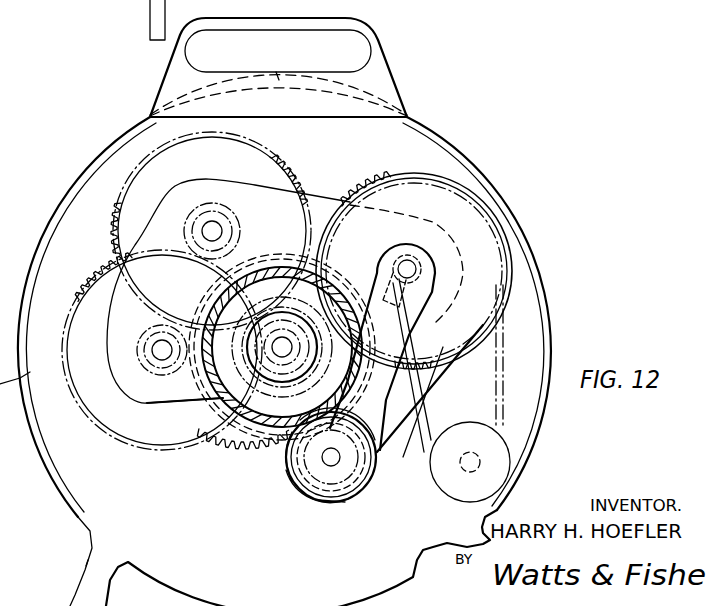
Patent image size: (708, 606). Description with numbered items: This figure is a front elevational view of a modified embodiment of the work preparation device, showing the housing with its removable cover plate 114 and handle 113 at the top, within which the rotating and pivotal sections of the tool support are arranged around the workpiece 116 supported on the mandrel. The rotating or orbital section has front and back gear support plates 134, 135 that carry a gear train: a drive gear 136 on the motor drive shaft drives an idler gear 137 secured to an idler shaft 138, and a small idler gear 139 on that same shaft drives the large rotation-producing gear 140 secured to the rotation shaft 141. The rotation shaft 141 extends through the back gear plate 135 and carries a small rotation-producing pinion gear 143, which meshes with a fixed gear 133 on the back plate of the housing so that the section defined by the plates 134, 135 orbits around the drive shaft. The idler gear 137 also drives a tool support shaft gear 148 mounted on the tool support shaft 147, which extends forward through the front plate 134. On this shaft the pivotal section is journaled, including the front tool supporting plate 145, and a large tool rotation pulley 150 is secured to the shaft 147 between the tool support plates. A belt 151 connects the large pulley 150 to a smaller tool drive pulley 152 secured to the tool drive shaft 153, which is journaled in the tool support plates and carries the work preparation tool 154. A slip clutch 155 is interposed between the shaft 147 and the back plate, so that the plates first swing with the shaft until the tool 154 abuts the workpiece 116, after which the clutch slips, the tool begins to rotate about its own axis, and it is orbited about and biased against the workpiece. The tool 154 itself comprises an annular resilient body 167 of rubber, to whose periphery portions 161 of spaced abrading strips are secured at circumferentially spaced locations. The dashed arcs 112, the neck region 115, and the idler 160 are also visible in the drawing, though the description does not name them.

The dashed arcs / cover plate 112 is at (258, 90).
The handle 113 is at (378, 57).
The removable cover plate 114 is at (520, 214).
The housing neck 115 is at (85, 566).
The workpiece 116 is at (208, 372).
The fixed gear 133 is at (217, 440).
The front gear support plate 134 is at (230, 186).
The back gear support plate 135 is at (212, 231).
The drive gear 136 is at (208, 375).
The idler gear 137 is at (300, 176).
The idler shaft 138 is at (222, 232).
The small idler gear 139 is at (233, 212).
The large rotation-producing gear 140 is at (106, 266).
The rotation shaft 141 is at (156, 342).
The small rotation-producing pinion gear 143 is at (150, 356).
The front tool supporting plate 145 is at (395, 325).
The tool support shaft 147 is at (399, 267).
The tool support shaft gear 148 is at (410, 170).
The large tool rotation pulley 150 is at (438, 205).
The belt 151 is at (495, 380).
The tool drive pulley 152 is at (356, 485).
The tool drive shaft 153 is at (370, 458).
The work preparation tool 154 is at (347, 513).
The slip clutch 155 is at (406, 254).
The idler 160 is at (472, 505).
The strip portions 161 is at (360, 447).
The annular resilient body 167 is at (300, 490).